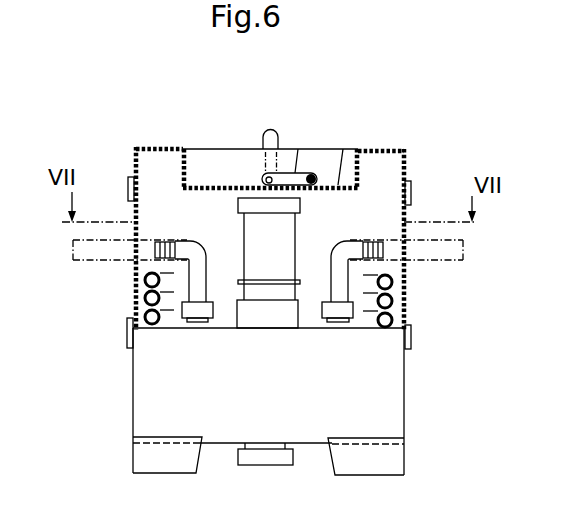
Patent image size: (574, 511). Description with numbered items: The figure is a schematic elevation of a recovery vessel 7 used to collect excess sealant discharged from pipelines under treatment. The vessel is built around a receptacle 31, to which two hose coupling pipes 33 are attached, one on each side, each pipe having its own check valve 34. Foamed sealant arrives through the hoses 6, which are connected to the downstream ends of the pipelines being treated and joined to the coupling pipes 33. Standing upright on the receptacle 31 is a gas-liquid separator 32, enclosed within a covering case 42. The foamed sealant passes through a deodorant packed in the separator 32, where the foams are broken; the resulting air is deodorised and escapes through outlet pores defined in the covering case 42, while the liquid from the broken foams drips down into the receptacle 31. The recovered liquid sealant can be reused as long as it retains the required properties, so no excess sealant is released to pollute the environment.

The recovery vessel 7 is at (331, 109).
The covering case 42 is at (368, 150).
The gas-liquid separator 32 is at (238, 252).
The receptacle 31 is at (274, 413).
The hose 6 is at (84, 261).
The hose coupling pipe 33 is at (195, 247).
The check valve 34 is at (198, 318).